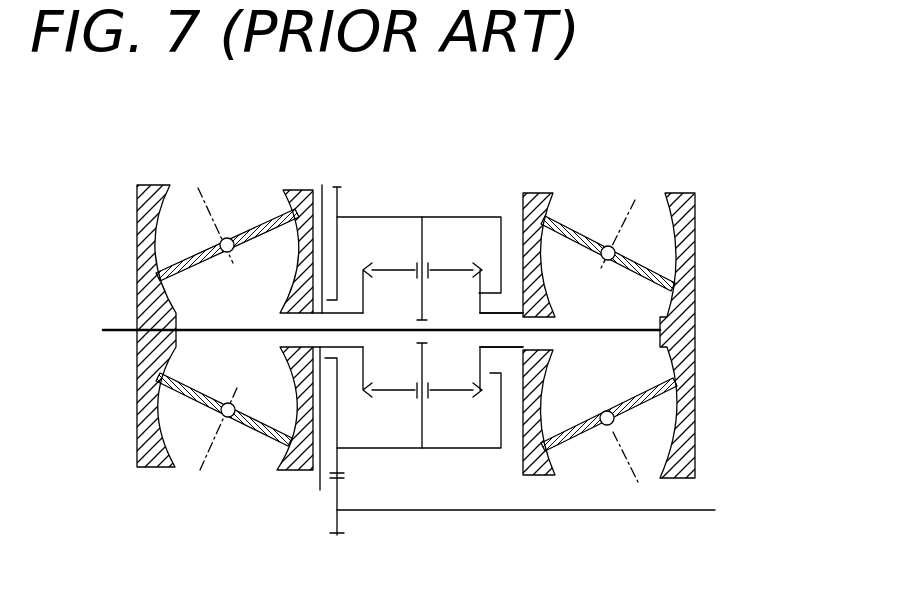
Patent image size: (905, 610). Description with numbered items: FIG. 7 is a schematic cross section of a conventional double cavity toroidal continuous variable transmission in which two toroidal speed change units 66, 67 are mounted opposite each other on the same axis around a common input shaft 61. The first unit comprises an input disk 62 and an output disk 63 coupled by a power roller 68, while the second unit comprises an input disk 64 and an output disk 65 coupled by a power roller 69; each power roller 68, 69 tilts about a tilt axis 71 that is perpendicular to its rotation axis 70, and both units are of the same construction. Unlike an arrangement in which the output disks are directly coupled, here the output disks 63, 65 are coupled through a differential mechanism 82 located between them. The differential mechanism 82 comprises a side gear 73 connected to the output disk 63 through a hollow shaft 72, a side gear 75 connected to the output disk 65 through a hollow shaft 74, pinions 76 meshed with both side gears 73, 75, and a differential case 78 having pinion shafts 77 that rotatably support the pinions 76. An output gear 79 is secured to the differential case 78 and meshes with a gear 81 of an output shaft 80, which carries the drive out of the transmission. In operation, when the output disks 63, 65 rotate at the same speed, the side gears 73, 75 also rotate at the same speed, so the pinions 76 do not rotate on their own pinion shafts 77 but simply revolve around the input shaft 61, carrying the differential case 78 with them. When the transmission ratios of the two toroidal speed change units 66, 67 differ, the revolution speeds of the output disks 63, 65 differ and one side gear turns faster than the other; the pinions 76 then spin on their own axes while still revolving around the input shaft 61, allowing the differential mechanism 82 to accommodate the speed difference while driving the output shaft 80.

The input shaft 61 is at (122, 330).
The input disk 62 is at (137, 212).
The output disk 63 is at (300, 190).
The input disk 64 is at (690, 235).
The output disk 65 is at (540, 192).
The toroidal speed change unit 66 is at (235, 175).
The toroidal speed change unit 67 is at (605, 185).
The power roller 68 is at (265, 224).
The power roller 69 is at (585, 237).
The rotation axis 70 is at (415, 324).
The tilt axis 71 is at (228, 254).
The hollow shaft 72 is at (322, 190).
The side gear 73 is at (363, 290).
The hollow shaft 74 is at (512, 313).
The side gear 75 is at (488, 262).
The pinion 76 is at (453, 270).
The pinion shaft 77 is at (422, 247).
The differential case 78 is at (380, 215).
The output gear 79 is at (342, 468).
The output shaft 80 is at (520, 512).
The gear 81 is at (342, 528).
The differential mechanism 82 is at (445, 185).